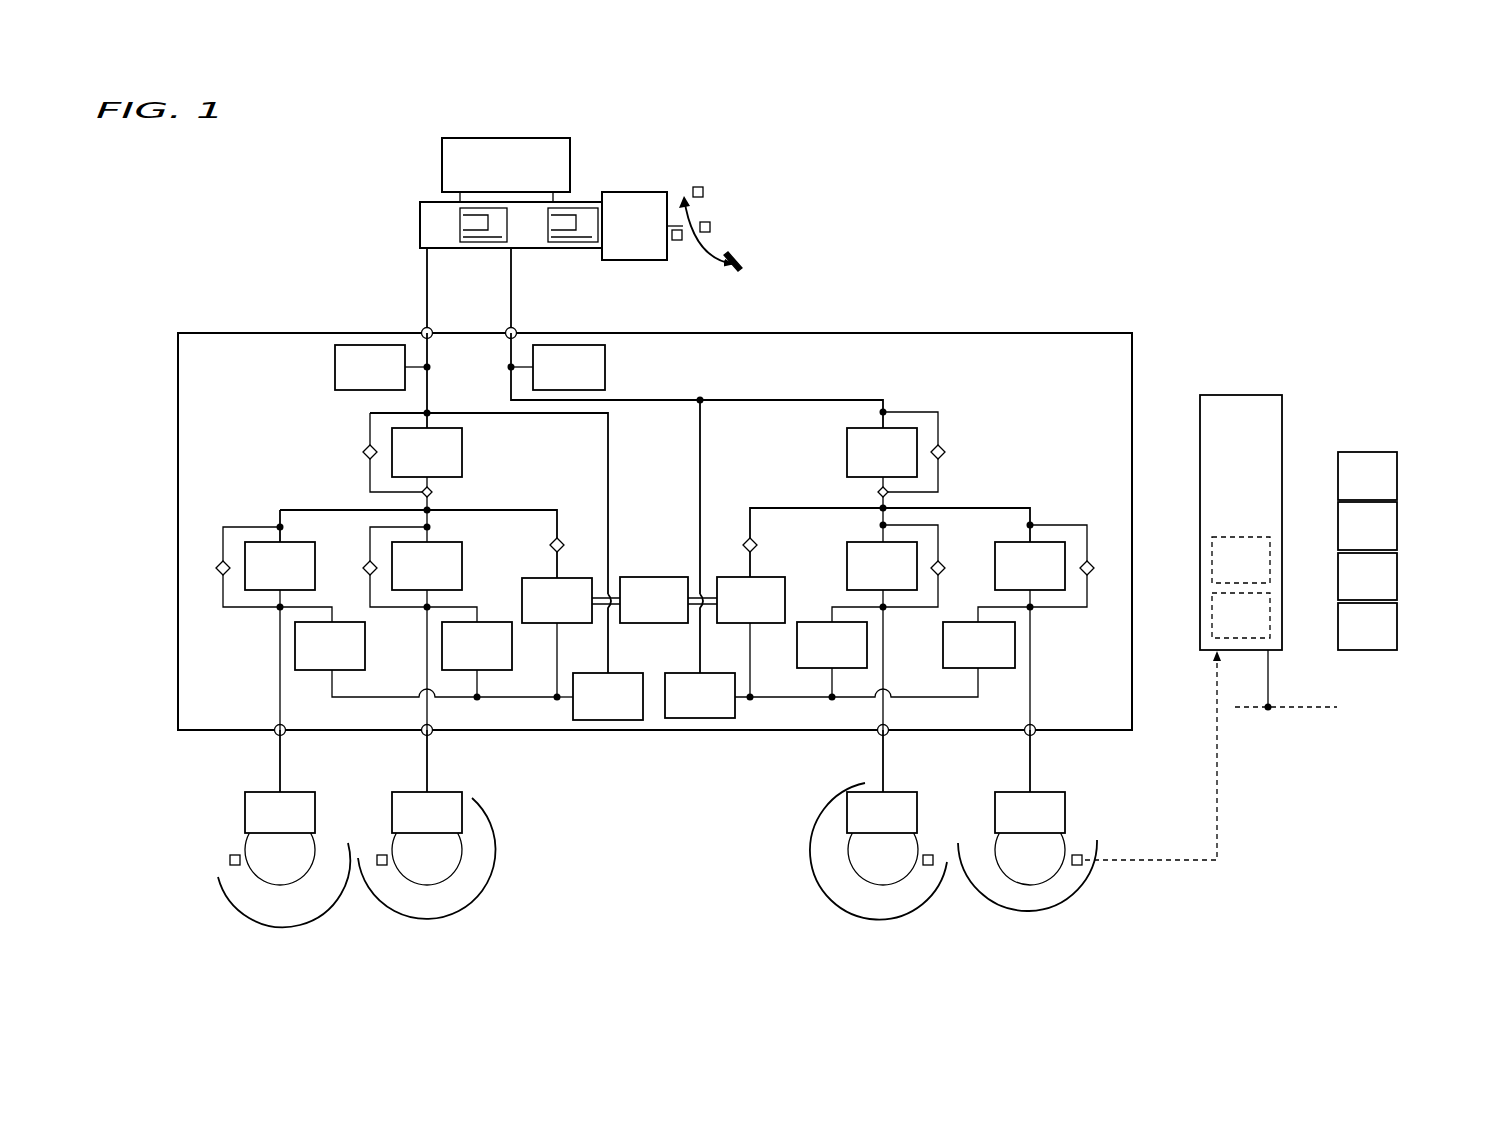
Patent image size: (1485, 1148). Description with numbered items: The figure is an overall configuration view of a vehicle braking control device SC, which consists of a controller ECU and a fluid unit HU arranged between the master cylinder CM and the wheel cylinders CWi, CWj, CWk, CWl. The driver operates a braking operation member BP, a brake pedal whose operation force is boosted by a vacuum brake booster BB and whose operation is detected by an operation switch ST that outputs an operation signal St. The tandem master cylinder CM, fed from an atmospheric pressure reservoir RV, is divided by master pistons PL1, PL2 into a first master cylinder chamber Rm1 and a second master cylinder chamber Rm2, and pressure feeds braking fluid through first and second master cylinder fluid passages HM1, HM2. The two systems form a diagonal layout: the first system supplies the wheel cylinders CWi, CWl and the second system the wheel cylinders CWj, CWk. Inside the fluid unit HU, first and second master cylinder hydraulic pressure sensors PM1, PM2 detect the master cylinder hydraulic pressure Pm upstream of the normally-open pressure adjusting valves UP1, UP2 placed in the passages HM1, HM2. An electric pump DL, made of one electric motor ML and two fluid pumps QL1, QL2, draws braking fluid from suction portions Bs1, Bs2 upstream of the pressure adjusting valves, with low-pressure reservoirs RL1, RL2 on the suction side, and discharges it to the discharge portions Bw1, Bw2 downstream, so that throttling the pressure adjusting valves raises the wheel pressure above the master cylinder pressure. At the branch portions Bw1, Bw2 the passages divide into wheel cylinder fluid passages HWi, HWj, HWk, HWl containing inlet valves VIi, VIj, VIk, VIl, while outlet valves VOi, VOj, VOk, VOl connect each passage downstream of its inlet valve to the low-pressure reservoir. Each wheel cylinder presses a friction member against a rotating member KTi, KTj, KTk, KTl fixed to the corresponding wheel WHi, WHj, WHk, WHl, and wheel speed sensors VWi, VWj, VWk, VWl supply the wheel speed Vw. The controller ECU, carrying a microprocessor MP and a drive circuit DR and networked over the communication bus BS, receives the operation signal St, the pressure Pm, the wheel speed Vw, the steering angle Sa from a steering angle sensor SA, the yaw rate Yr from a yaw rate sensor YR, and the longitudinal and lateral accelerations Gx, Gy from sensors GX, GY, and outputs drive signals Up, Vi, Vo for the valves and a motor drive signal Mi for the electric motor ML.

The reservoir RV is at (506, 165).
The master cylinder CM is at (432, 202).
The second master piston PL2 is at (493, 250).
The first master piston PL1 is at (590, 250).
The second master cylinder chamber Rm2 is at (423, 252).
The first master cylinder chamber Rm1 is at (527, 252).
The brake booster BB is at (642, 226).
The braking operation member BP is at (742, 262).
The operation switch ST is at (708, 222).
The fluid unit HU is at (240, 333).
The braking control device SC is at (900, 300).
The second master cylinder hydraulic pressure sensor PM2 is at (383, 367).
The first master cylinder hydraulic pressure sensor PM1 is at (557, 367).
The second master cylinder fluid passage HM2 is at (430, 353).
The first master cylinder fluid passage HM1 is at (616, 400).
The first suction portion Bs1 is at (704, 396).
The second suction portion Bs2 is at (433, 415).
The second pressure adjusting valve UP2 is at (412, 477).
The first pressure adjusting valve UP1 is at (896, 476).
The second discharge portion Bw2 is at (432, 509).
The first discharge portion Bw1 is at (880, 507).
The inlet valve VIj is at (274, 627).
The inlet valve VIk is at (420, 628).
The inlet valve VIl is at (888, 627).
The inlet valve VIi is at (1036, 626).
The outlet valve VOj is at (426, 659).
The outlet valve VOk is at (477, 661).
The outlet valve VOl is at (832, 661).
The outlet valve VOi is at (875, 659).
The second fluid pump QL2 is at (571, 639).
The electric motor ML is at (654, 600).
The first fluid pump QL1 is at (736, 639).
The second low-pressure reservoir RL2 is at (600, 696).
The first low-pressure reservoir RL1 is at (700, 695).
The electric pump DL is at (655, 548).
The controller ECU is at (1241, 522).
The microprocessor MP is at (1241, 560).
The drive circuit DR is at (1241, 615).
The operation signal St is at (1241, 393).
The master cylinder hydraulic pressure Pm is at (1199, 425).
The drive signal for electric motor Mi is at (1198, 475).
The drive signal for pressure adjusting valve Up is at (1198, 525).
The drive signal for inlet valve Vi is at (1198, 575).
The drive signal for outlet valve Vo is at (1198, 628).
The steering angle Sa is at (1336, 475).
The yaw rate Yr is at (1336, 525).
The longitudinal acceleration Gx is at (1336, 575).
The lateral acceleration Gy is at (1336, 628).
The steering angle sensor SA is at (1367, 476).
The yaw rate sensor YR is at (1367, 526).
The longitudinal acceleration sensor GX is at (1367, 576).
The lateral acceleration sensor GY is at (1367, 626).
The communication bus BS is at (1286, 680).
The wheel speed Vw is at (1151, 756).
The wheel cylinder fluid passage HWj is at (284, 742).
The wheel cylinder fluid passage HWk is at (432, 742).
The wheel cylinder fluid passage HWl is at (887, 742).
The wheel cylinder fluid passage HWi is at (1034, 742).
The wheel cylinder CWj is at (280, 812).
The wheel cylinder CWk is at (427, 812).
The wheel cylinder CWl is at (882, 812).
The wheel cylinder CWi is at (1030, 812).
The rotating member KTj is at (280, 859).
The rotating member KTk is at (427, 859).
The rotating member KTl is at (883, 859).
The rotating member KTi is at (1030, 859).
The wheel WHj is at (218, 878).
The wheel WHk is at (484, 887).
The wheel WHl is at (820, 880).
The wheel WHi is at (1093, 880).
The wheel speed sensor VWj is at (234, 855).
The wheel speed sensor VWk is at (381, 855).
The wheel speed sensor VWl is at (929, 855).
The wheel speed sensor VWi is at (1078, 855).